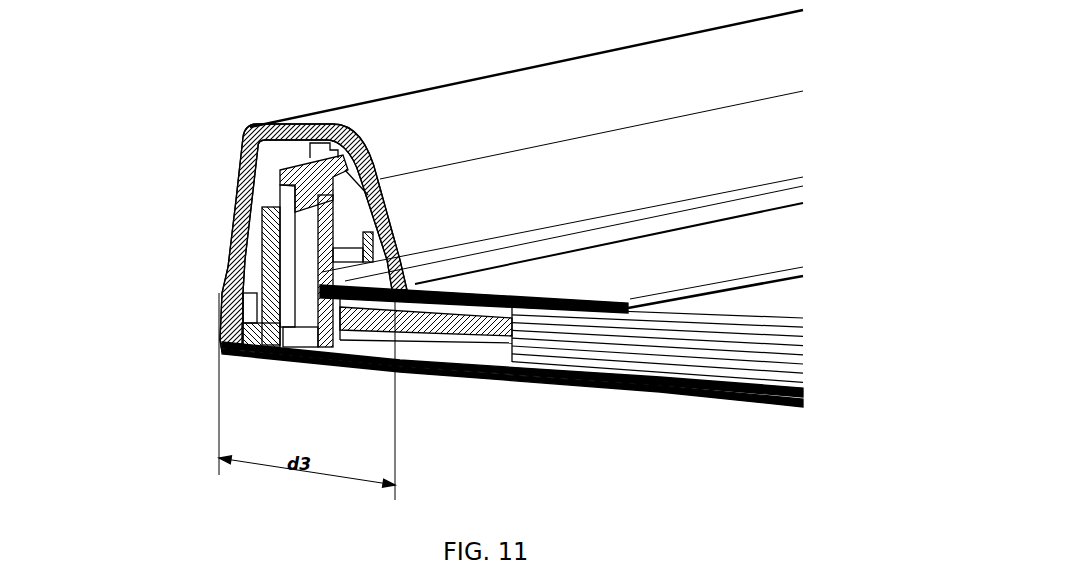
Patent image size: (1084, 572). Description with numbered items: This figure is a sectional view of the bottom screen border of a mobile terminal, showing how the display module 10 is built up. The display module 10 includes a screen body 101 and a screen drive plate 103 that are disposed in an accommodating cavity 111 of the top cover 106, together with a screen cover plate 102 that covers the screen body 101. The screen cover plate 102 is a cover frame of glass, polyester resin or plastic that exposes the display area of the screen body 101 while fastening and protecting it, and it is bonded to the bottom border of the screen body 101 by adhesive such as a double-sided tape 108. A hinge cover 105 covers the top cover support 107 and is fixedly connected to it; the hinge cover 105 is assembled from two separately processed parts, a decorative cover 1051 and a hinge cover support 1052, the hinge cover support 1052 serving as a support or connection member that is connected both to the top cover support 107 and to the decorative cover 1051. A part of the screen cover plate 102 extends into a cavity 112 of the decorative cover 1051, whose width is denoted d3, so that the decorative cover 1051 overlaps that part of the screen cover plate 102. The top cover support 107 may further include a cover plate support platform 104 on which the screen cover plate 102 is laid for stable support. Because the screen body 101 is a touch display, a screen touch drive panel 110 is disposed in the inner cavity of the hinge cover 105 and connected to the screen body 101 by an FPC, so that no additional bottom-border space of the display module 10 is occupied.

The display module 10 is at (344, 77).
The screen body 101 is at (698, 380).
The screen cover plate 102 is at (712, 275).
The screen drive plate 103 is at (467, 320).
The cover plate support platform 104 is at (317, 333).
The hinge cover 105 is at (138, 193).
The decorative cover 1051 is at (243, 150).
The hinge cover support 1052 is at (323, 248).
The top cover 106 is at (597, 393).
The top cover support 107 is at (247, 342).
The double-sided tape 108 is at (552, 305).
The screen touch drive panel 110 is at (282, 335).
The accommodating cavity 111 is at (400, 332).
The cavity 112 is at (282, 157).